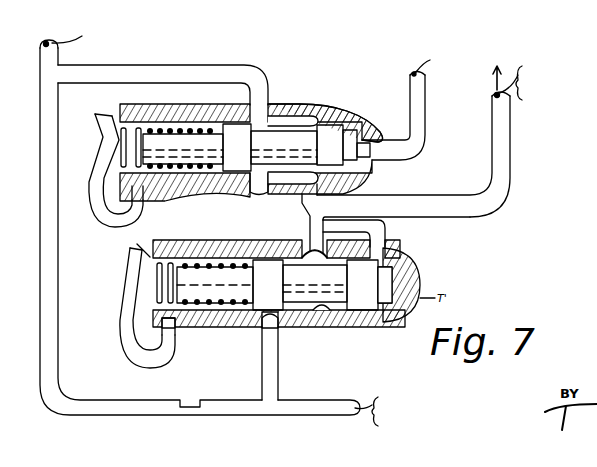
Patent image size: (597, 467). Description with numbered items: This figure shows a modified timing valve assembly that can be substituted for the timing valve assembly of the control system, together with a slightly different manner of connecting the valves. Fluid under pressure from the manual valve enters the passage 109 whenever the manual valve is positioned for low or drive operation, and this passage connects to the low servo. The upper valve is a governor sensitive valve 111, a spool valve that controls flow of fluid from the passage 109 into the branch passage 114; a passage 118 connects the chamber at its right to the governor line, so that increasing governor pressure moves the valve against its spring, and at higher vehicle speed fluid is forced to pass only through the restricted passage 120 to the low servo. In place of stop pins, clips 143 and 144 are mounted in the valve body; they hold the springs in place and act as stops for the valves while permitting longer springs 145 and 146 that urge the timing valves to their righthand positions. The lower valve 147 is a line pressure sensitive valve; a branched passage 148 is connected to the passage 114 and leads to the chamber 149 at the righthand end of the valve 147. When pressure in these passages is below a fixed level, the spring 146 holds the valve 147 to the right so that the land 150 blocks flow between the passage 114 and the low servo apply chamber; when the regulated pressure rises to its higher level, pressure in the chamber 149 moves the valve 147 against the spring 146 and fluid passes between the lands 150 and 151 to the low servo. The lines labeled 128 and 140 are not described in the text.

The passage 109 is at (50, 128).
The governor sensitive valve 111 is at (283, 125).
The branch passage 114 is at (300, 218).
The passage 118 is at (413, 118).
The restricted passage 120 is at (251, 164).
The manual valve exhaust line 128 is at (500, 168).
The low servo line 140 is at (192, 410).
The clip 143 is at (122, 228).
The clip 144 is at (158, 353).
The spring 145 is at (135, 140).
The spring 146 is at (138, 218).
The valve 147 is at (338, 322).
The branched passage 148 is at (360, 232).
The chamber 149 is at (398, 286).
The land 150 is at (278, 330).
The land 151 is at (370, 312).